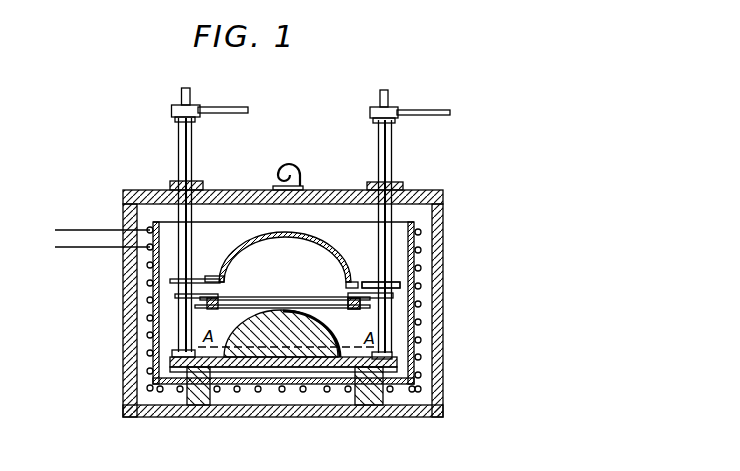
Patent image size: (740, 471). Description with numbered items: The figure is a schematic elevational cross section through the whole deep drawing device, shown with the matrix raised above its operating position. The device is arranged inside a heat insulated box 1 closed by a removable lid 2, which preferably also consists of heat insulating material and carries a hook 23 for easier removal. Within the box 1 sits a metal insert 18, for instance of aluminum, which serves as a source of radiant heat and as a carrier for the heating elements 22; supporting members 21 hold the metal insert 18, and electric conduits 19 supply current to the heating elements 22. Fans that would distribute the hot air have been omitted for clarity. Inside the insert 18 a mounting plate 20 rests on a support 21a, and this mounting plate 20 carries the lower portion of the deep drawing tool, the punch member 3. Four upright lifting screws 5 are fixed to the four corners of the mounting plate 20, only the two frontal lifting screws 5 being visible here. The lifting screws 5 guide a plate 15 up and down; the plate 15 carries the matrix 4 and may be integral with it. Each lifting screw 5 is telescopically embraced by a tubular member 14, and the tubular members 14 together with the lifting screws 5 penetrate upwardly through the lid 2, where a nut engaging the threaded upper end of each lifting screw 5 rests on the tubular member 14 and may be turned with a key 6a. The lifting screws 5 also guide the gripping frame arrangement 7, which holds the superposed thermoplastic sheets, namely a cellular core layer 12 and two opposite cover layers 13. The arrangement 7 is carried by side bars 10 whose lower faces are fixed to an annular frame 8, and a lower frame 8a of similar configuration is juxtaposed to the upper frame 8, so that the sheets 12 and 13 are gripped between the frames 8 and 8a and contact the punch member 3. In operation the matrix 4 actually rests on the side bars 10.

The heat insulated box 1 is at (136, 352).
The removable lid 2 is at (337, 190).
The punch member 3 is at (247, 323).
The matrix 4 is at (327, 262).
The lifting screws 5 is at (183, 97).
The key 6a is at (200, 112).
The gripping frame arrangement 7 is at (234, 292).
The annular frame 8 is at (345, 300).
The lower frame 8a is at (352, 309).
The side bars 10 is at (198, 279).
The cellular core layer 12 is at (258, 303).
The cover layers 13 is at (282, 287).
The tubular members 14 is at (183, 148).
The plate 15 is at (360, 282).
The metal insert 18 is at (277, 393).
The electric conduits 19 is at (92, 236).
The mounting plate 20 is at (232, 368).
The supporting members 21 is at (196, 401).
The support 21a is at (188, 369).
The heating elements 22 is at (147, 304).
The hook 23 is at (303, 178).